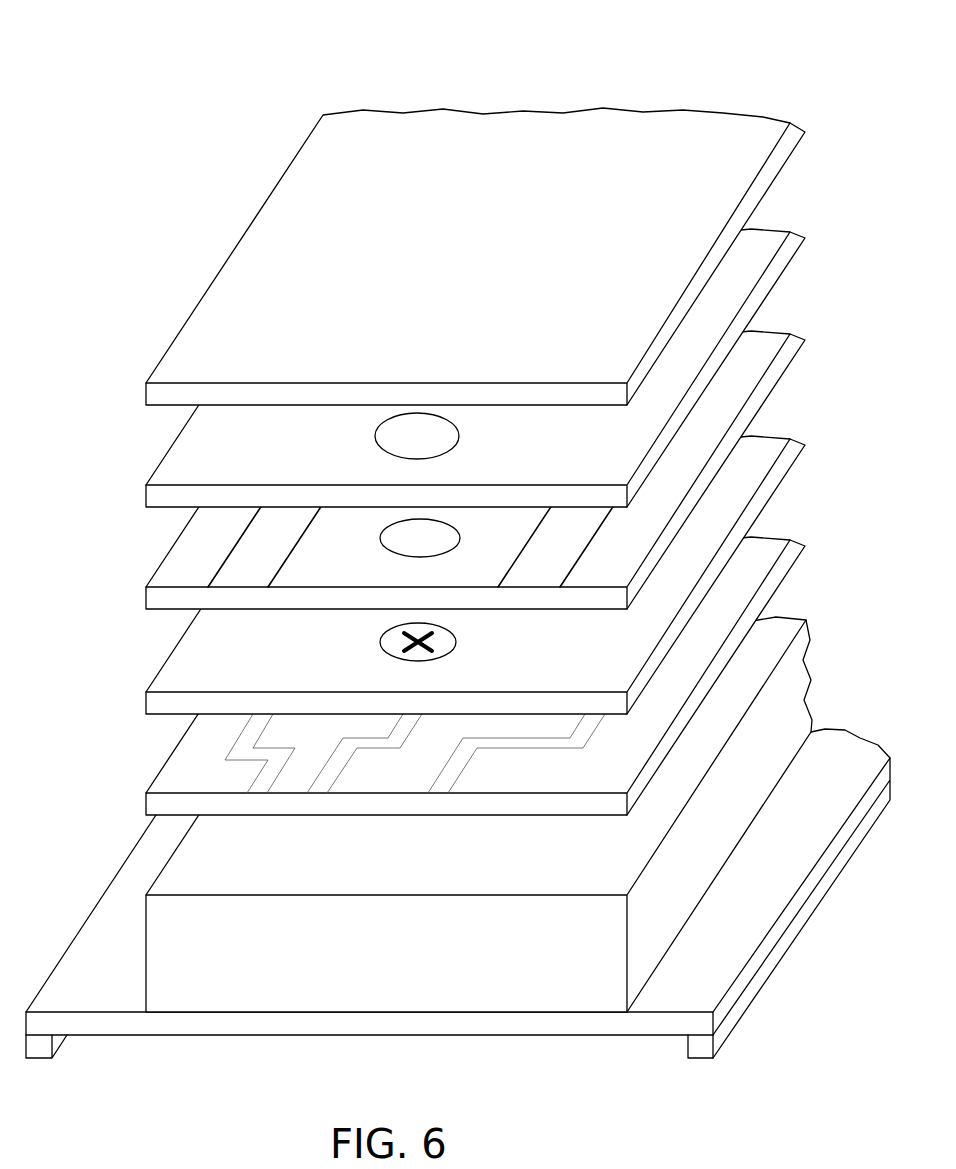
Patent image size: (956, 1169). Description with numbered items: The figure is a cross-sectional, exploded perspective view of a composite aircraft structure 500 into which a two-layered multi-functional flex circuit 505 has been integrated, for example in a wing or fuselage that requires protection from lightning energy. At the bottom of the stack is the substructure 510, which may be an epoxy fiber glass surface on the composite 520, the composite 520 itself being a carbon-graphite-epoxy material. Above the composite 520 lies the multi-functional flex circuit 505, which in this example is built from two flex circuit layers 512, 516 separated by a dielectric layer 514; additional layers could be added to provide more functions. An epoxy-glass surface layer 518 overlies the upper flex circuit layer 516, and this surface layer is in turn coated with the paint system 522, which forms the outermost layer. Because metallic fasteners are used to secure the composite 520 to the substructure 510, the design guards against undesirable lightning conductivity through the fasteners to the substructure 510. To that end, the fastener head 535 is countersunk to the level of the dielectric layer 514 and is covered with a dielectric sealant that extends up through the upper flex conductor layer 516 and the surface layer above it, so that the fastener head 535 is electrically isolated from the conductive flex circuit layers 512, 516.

The composite aircraft structure 500 is at (150, 118).
The multi-functional flex circuit 505 is at (460, 576).
The substructure 510 is at (120, 1023).
The flex circuit layer 512 is at (782, 568).
The dielectric layer 514 is at (505, 574).
The flex circuit layer 516 is at (451, 469).
The epoxy-glass surface layer 518 is at (451, 367).
The composite 520 is at (275, 997).
The paint system 522 is at (199, 325).
The fastener head 535 is at (458, 645).